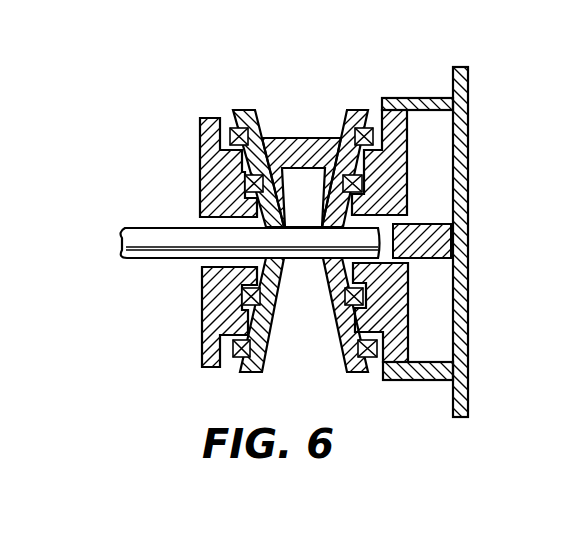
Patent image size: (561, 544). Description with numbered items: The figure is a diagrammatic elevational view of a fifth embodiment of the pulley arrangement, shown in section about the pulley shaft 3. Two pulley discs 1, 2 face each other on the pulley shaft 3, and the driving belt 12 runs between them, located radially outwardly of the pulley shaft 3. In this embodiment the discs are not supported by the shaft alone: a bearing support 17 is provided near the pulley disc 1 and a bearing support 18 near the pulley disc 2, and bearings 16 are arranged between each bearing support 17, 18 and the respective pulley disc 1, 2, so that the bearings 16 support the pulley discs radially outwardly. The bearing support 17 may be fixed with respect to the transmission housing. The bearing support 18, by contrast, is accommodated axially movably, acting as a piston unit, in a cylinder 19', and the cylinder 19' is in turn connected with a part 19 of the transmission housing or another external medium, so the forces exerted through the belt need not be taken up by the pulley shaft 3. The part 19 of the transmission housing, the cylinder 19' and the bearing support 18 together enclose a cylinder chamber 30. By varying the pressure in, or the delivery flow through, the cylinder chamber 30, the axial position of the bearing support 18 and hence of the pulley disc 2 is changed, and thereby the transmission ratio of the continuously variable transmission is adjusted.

The pulley disc 1 is at (238, 110).
The pulley disc 2 is at (343, 110).
The pulley shaft 3 is at (147, 244).
The driving belt 12 is at (288, 138).
The bearings 16 is at (337, 168).
The bearing support 17 is at (205, 367).
The bearing support 18 is at (408, 322).
The part of the transmission housing 19 is at (280, 240).
The cylinder 19' is at (280, 238).
The cylinder chamber 30 is at (418, 175).